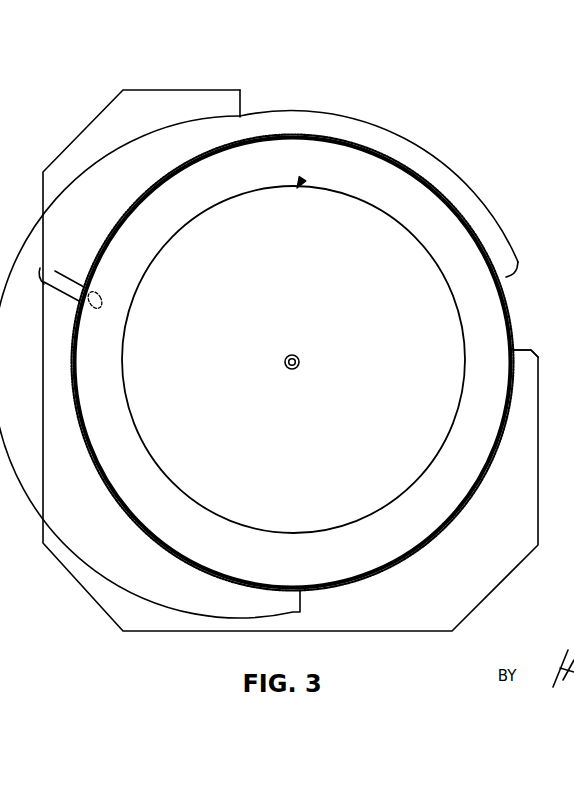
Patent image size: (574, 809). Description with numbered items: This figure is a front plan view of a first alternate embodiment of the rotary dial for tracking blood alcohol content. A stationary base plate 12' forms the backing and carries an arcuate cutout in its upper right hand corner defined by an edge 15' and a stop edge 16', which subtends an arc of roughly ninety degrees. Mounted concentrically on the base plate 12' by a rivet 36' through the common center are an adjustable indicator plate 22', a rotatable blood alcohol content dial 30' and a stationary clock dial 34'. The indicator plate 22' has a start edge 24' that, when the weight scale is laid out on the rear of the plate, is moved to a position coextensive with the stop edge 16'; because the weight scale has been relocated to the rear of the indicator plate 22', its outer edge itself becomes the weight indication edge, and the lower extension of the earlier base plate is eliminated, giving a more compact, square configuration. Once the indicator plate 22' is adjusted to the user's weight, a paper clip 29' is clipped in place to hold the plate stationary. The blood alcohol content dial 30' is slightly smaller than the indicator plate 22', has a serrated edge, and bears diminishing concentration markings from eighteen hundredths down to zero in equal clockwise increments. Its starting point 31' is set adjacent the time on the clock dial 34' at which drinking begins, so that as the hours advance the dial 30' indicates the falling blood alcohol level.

The base plate 12' is at (290, 360).
The edge 15' is at (269, 83).
The indicator plate 22' is at (259, 357).
The start edge 24' is at (531, 283).
The stop edge 16' is at (536, 339).
The blood alcohol content dial 30' is at (293, 361).
The clock dial 34' is at (293, 360).
The starting point 31' is at (336, 132).
The rivet 36' is at (314, 378).
The paper clip 29' is at (57, 297).